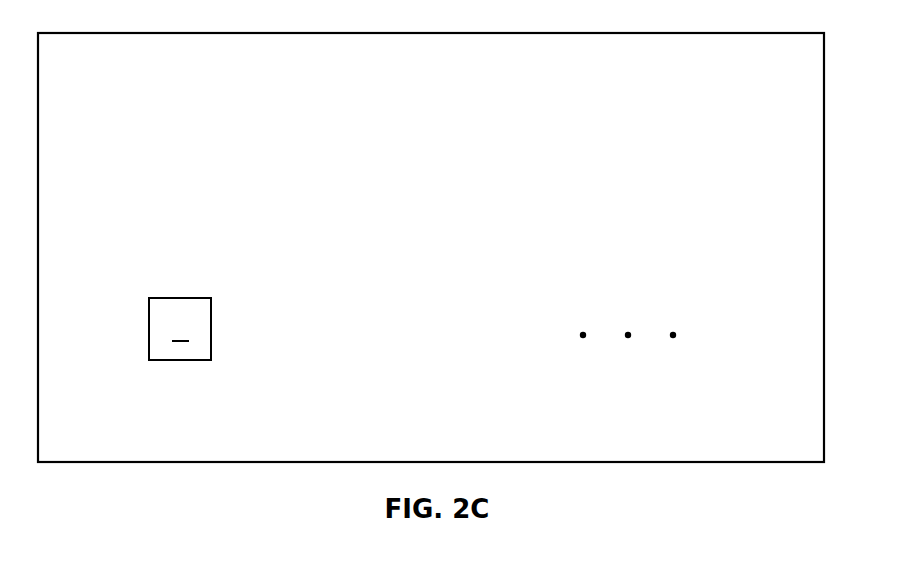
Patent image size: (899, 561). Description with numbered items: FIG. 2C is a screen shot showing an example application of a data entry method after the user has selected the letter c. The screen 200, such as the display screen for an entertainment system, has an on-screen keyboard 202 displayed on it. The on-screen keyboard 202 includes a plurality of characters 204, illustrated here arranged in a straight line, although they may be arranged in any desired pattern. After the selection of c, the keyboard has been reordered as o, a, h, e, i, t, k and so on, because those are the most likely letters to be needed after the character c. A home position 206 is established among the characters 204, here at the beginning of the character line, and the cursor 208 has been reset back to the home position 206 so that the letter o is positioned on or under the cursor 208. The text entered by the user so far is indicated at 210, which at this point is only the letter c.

The screen 200 is at (105, 33).
The on-screen keyboard 202 is at (673, 134).
The characters 204 is at (738, 390).
The home position 206 is at (181, 298).
The cursor 208 is at (180, 344).
The text entered by the user 210 is at (165, 157).